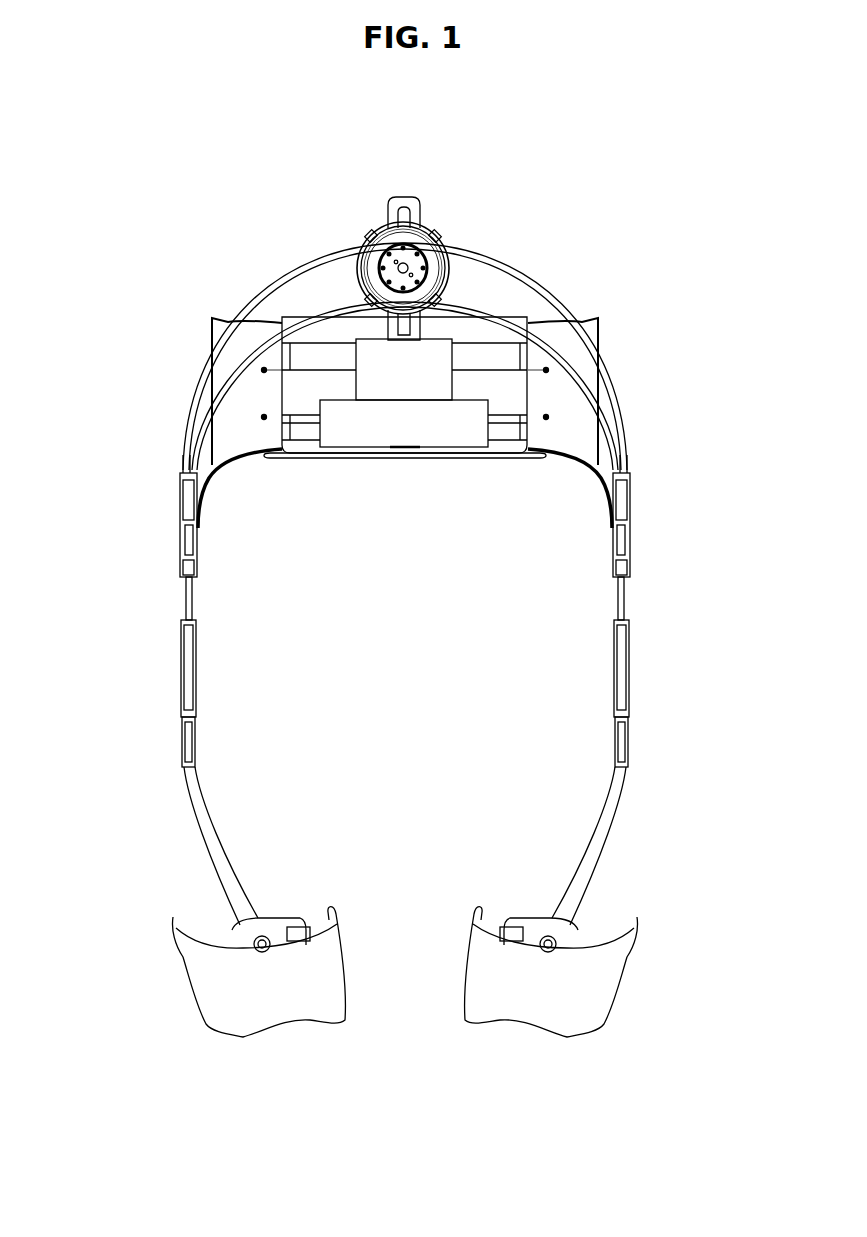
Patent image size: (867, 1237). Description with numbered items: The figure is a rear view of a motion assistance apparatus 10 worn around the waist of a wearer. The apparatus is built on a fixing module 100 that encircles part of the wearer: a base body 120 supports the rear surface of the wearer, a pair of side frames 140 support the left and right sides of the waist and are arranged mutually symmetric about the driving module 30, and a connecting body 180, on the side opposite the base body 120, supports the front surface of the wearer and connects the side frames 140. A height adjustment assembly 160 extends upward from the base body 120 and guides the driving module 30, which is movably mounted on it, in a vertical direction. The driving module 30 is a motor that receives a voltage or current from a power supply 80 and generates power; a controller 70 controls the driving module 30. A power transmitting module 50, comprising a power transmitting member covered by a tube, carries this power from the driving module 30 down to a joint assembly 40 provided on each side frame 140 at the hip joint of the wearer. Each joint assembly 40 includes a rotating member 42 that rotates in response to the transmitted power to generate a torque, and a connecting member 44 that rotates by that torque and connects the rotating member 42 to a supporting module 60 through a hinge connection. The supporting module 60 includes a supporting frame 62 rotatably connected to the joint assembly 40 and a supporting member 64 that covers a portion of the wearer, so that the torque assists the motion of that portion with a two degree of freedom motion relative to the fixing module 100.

The motion assistance apparatus 10 is at (418, 115).
The driving module 30 is at (378, 262).
The joint assembly 40 is at (107, 465).
The rotating member 42 is at (181, 505).
The connecting member 44 is at (183, 600).
The power transmitting module 50 is at (243, 291).
The supporting module 60 is at (107, 818).
The supporting frame 62 is at (194, 822).
The supporting member 64 is at (193, 958).
The controller 70 is at (384, 388).
The power supply 80 is at (433, 436).
The fixing module 100 is at (693, 202).
The base body 120 is at (492, 353).
The side frames 140 is at (578, 380).
The height adjustment assembly 160 is at (417, 207).
The connecting body 180 is at (510, 455).